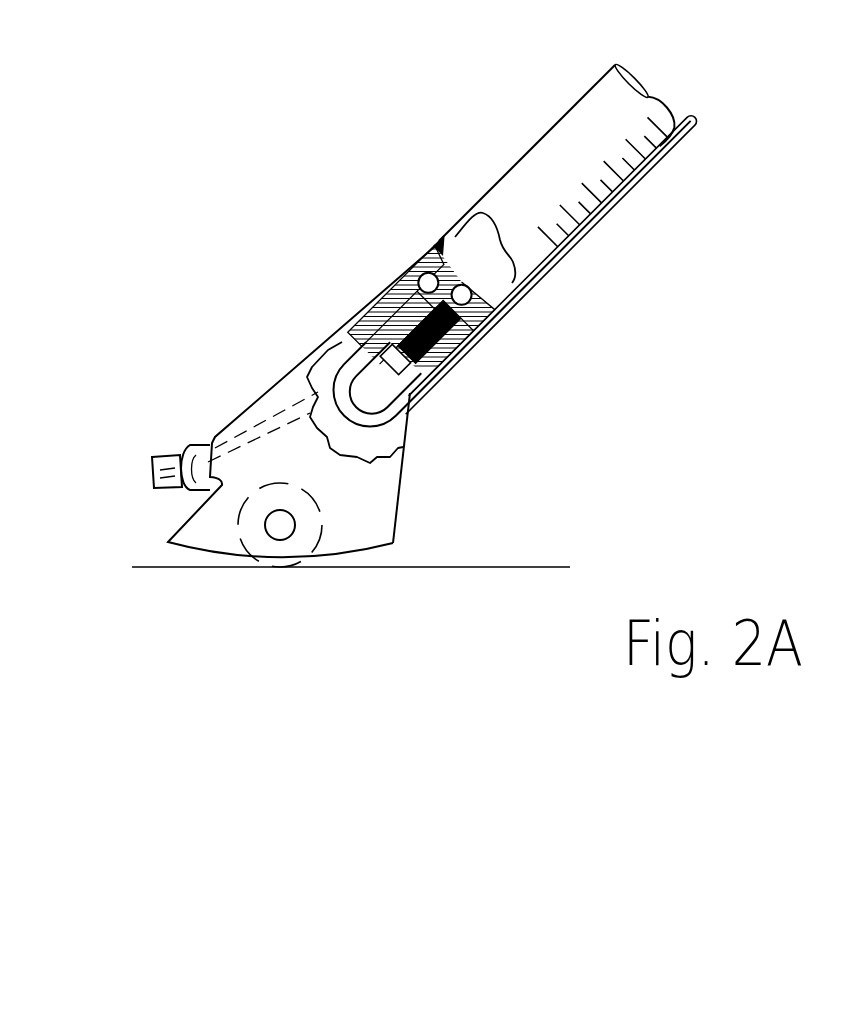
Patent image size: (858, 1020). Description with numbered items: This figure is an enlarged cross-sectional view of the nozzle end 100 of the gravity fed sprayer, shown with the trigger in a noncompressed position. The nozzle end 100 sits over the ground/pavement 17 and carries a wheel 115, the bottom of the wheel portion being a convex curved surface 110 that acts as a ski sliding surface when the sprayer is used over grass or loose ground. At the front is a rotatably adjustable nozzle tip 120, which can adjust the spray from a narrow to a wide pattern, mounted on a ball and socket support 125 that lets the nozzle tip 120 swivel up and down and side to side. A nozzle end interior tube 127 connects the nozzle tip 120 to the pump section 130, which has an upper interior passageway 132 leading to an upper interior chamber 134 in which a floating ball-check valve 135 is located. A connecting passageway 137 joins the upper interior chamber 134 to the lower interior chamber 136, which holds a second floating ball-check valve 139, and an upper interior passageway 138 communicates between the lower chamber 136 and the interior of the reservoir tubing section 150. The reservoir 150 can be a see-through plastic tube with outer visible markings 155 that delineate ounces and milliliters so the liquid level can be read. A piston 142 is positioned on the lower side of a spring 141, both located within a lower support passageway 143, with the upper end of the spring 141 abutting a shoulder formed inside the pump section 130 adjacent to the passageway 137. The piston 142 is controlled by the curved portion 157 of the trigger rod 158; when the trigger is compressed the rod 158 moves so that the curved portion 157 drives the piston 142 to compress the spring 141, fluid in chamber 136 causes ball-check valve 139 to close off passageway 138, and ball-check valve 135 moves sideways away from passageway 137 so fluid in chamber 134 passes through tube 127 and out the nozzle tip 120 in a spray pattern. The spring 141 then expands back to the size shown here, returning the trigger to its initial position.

The ground/pavement 17 is at (348, 568).
The nozzle end 100 is at (515, 598).
The convex curved bottom surface 110 is at (190, 552).
The wheel 115 is at (253, 553).
The nozzle tip 120 is at (168, 455).
The ball and socket support 125 is at (198, 443).
The nozzle end interior tube 127 is at (302, 373).
The pump section 130 is at (372, 303).
The upper interior passageway 132 is at (424, 272).
The upper interior chamber 134 is at (440, 225).
The floating ball-check valve 135 is at (428, 266).
The lower interior chamber 136 is at (490, 328).
The connecting passageway 137 is at (476, 345).
The upper interior passageway 138 is at (477, 283).
The second floating ball-check valve 139 is at (490, 302).
The spring 141 is at (442, 375).
The piston 142 is at (420, 413).
The lower support passageway 143 is at (352, 330).
The reservoir tubing section 150 is at (540, 140).
The outer visible markings 155 is at (623, 183).
The curved portion 157 is at (405, 450).
The trigger rod 158 is at (587, 233).